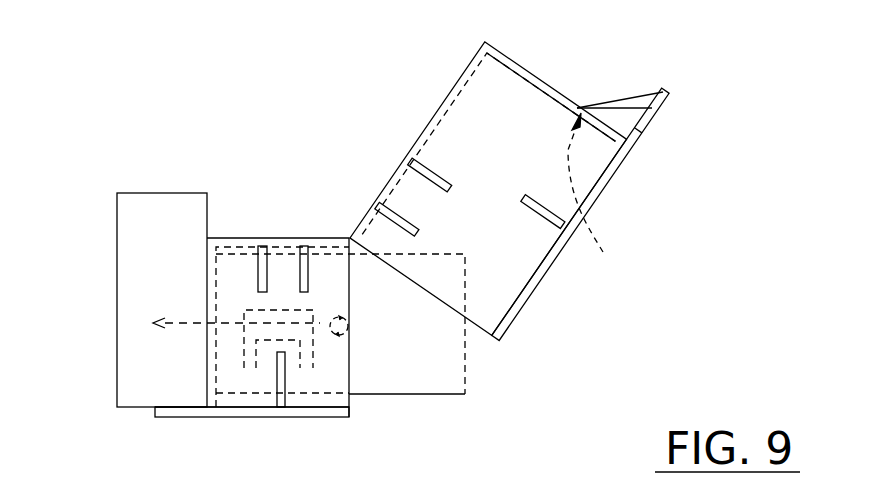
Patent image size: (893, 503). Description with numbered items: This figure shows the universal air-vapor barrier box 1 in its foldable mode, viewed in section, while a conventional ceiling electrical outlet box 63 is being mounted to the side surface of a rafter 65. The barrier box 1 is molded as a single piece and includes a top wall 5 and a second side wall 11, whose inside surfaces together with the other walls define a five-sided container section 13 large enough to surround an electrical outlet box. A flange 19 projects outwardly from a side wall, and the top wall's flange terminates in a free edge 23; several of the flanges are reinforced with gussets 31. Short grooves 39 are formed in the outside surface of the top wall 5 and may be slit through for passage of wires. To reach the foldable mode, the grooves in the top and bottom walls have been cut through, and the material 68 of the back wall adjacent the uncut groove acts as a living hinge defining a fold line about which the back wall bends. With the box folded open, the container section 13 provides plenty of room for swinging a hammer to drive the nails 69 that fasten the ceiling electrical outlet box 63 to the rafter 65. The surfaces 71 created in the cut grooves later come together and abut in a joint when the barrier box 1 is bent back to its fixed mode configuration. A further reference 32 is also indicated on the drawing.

The universal air-vapor barrier box 1 is at (566, 94).
The top wall 5 is at (443, 97).
The second side wall 11 is at (507, 83).
The container section 13 is at (596, 195).
The flange 19 is at (179, 417).
The free edge 23 is at (615, 172).
The gussets 31 is at (540, 213).
The lower edge 32 is at (168, 406).
The short grooves 39 is at (300, 272).
The ceiling electrical outlet box 63 is at (465, 381).
The rafter 65 is at (152, 237).
The material 68 is at (350, 238).
The nails 69 is at (350, 322).
The surfaces 71 is at (350, 402).